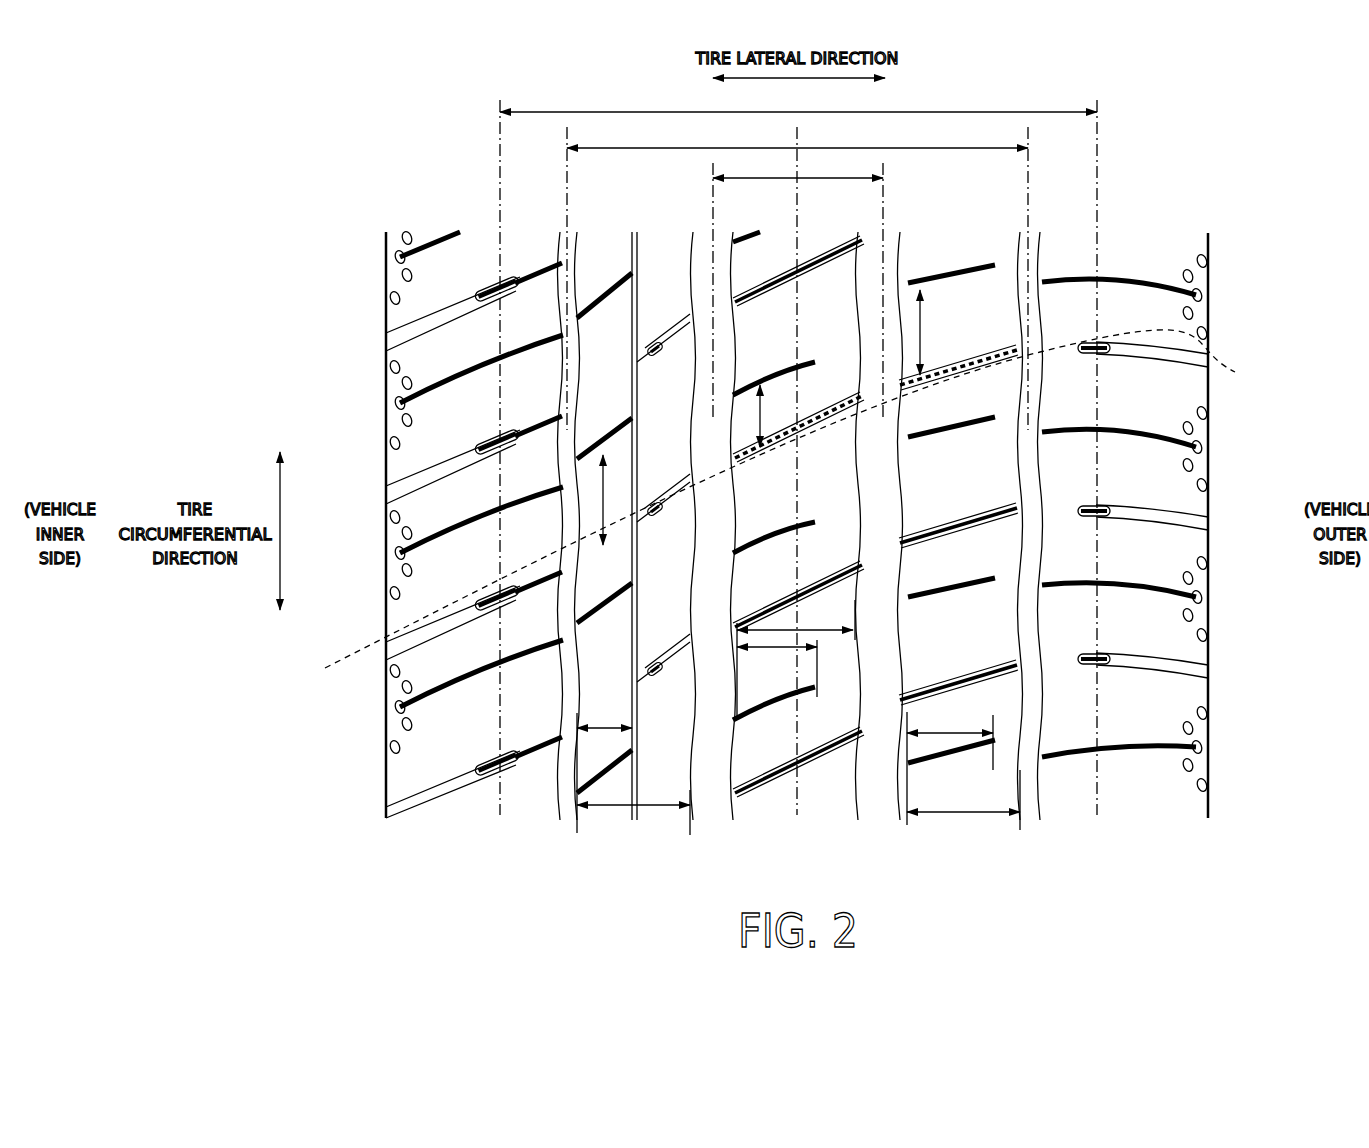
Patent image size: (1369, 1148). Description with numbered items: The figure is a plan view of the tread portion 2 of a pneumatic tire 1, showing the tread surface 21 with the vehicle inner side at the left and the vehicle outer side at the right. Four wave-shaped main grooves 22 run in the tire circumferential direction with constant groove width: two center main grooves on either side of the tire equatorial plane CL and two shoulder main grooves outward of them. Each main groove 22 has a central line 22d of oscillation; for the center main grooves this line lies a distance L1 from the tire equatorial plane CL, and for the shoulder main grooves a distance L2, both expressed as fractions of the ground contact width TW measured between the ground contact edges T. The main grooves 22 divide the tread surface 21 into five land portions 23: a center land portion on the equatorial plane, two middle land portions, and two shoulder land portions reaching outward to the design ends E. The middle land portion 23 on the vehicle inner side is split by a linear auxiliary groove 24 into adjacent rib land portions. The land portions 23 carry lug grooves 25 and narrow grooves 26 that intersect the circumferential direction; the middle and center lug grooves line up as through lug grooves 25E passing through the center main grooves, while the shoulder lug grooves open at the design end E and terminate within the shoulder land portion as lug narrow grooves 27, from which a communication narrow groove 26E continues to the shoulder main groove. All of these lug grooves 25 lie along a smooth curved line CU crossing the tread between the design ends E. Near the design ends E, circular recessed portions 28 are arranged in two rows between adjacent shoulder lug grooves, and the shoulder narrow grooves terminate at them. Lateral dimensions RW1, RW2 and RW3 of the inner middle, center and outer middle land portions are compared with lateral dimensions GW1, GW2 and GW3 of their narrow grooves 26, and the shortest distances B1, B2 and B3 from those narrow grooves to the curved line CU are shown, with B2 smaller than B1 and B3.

The pneumatic tire 1 is at (1278, 140).
The tread portion 2 is at (1175, 260).
The tread surface 21 is at (1133, 255).
The main groove 22 is at (560, 243).
The central line of oscillation 22d is at (565, 183).
The land portion 23 is at (485, 808).
The auxiliary groove 24 is at (637, 762).
The lug groove 25 is at (437, 542).
The through lug groove 25E is at (833, 442).
The narrow groove 26 is at (490, 455).
The communication narrow groove 26E is at (522, 414).
The lug narrow groove 27 is at (475, 435).
The recessed portion 28 is at (1238, 619).
The design end E is at (382, 292).
The ground contact edge T is at (498, 154).
The tire equatorial plane CL is at (800, 215).
The curved line CU is at (1238, 362).
The ground contact width TW is at (798, 99).
The distance L1 is at (798, 165).
The distance L2 is at (797, 135).
The shortest distance B1 is at (605, 547).
The shortest distance B2 is at (770, 387).
The shortest distance B3 is at (925, 295).
The lateral dimension of middle land portion narrow grooves GW1 is at (605, 725).
The lateral dimension of center land portion narrow grooves GW2 is at (764, 650).
The lateral dimension of middle land portion narrow grooves GW3 is at (970, 732).
The lateral dimension of middle land portion RW1 is at (665, 798).
The lateral dimension of center land portion RW2 is at (828, 629).
The lateral dimension of middle land portion RW3 is at (952, 808).